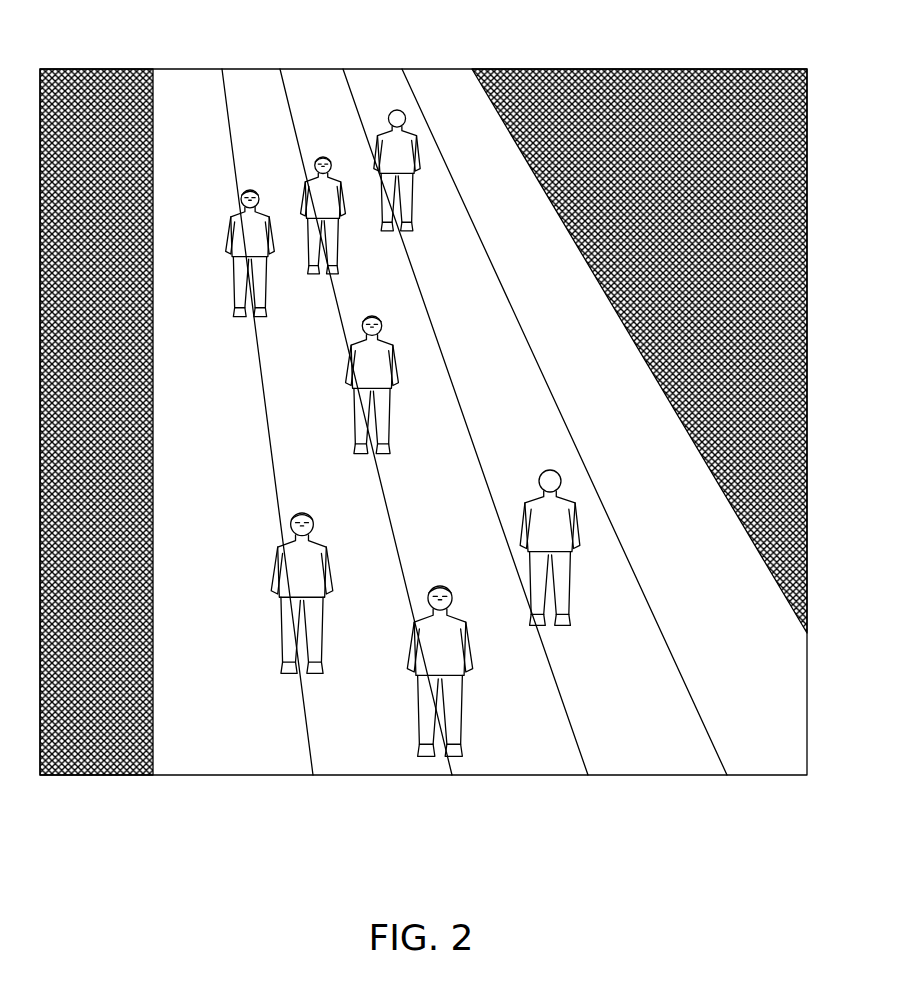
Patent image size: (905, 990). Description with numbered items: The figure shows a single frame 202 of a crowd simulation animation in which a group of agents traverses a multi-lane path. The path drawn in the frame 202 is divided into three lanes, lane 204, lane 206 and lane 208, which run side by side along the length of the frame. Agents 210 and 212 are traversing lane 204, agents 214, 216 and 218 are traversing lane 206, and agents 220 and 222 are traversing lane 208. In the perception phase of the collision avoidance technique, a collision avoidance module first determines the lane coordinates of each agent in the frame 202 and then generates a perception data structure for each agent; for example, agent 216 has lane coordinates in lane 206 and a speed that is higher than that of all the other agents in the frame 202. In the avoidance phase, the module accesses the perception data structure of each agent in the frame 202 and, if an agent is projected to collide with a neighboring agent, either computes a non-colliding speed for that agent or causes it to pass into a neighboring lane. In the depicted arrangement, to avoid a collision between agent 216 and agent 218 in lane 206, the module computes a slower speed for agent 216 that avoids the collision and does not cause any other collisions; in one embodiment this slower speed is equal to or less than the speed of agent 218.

The frame 202 is at (650, 68).
The lane 204 is at (462, 410).
The lane 206 is at (392, 520).
The lane 208 is at (262, 405).
The agent 210 is at (397, 108).
The agent 212 is at (537, 498).
The agent 214 is at (323, 156).
The agent 216 is at (372, 315).
The agent 218 is at (438, 582).
The agent 220 is at (228, 232).
The agent 222 is at (310, 518).